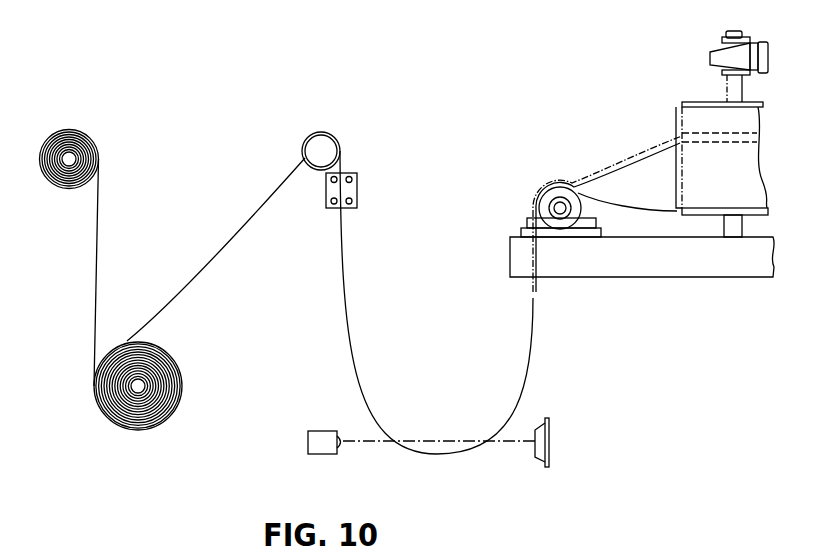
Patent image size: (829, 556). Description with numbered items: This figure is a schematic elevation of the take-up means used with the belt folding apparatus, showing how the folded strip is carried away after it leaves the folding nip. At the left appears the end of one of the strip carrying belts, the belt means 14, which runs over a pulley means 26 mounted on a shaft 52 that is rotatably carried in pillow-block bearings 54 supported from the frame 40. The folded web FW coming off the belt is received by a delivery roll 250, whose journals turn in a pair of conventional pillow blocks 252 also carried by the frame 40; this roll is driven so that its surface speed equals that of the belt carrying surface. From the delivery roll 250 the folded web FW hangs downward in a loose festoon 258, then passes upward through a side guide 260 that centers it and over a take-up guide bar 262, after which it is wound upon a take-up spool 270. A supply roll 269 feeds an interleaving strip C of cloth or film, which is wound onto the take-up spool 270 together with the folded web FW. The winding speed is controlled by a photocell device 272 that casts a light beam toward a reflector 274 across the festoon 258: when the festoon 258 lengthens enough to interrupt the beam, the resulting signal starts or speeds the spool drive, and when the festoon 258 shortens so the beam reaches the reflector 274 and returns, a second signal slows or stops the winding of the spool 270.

The supply roll 269 is at (46, 144).
The interleaving strip C is at (97, 243).
The take-up spool 270 is at (183, 386).
The take-up guide bar 262 is at (310, 132).
The side guide 260 is at (358, 185).
The folded web FW is at (527, 357).
The festoon 258 is at (452, 455).
The photocell device 272 is at (318, 455).
The reflector 274 is at (550, 443).
The frame 40 is at (733, 278).
The delivery roll 250 is at (580, 200).
The pillow blocks 252 is at (598, 222).
The belt means 14 is at (757, 118).
The pulley means 26 is at (690, 103).
The shaft 52 is at (725, 87).
The pillow-block bearings 54 is at (712, 52).